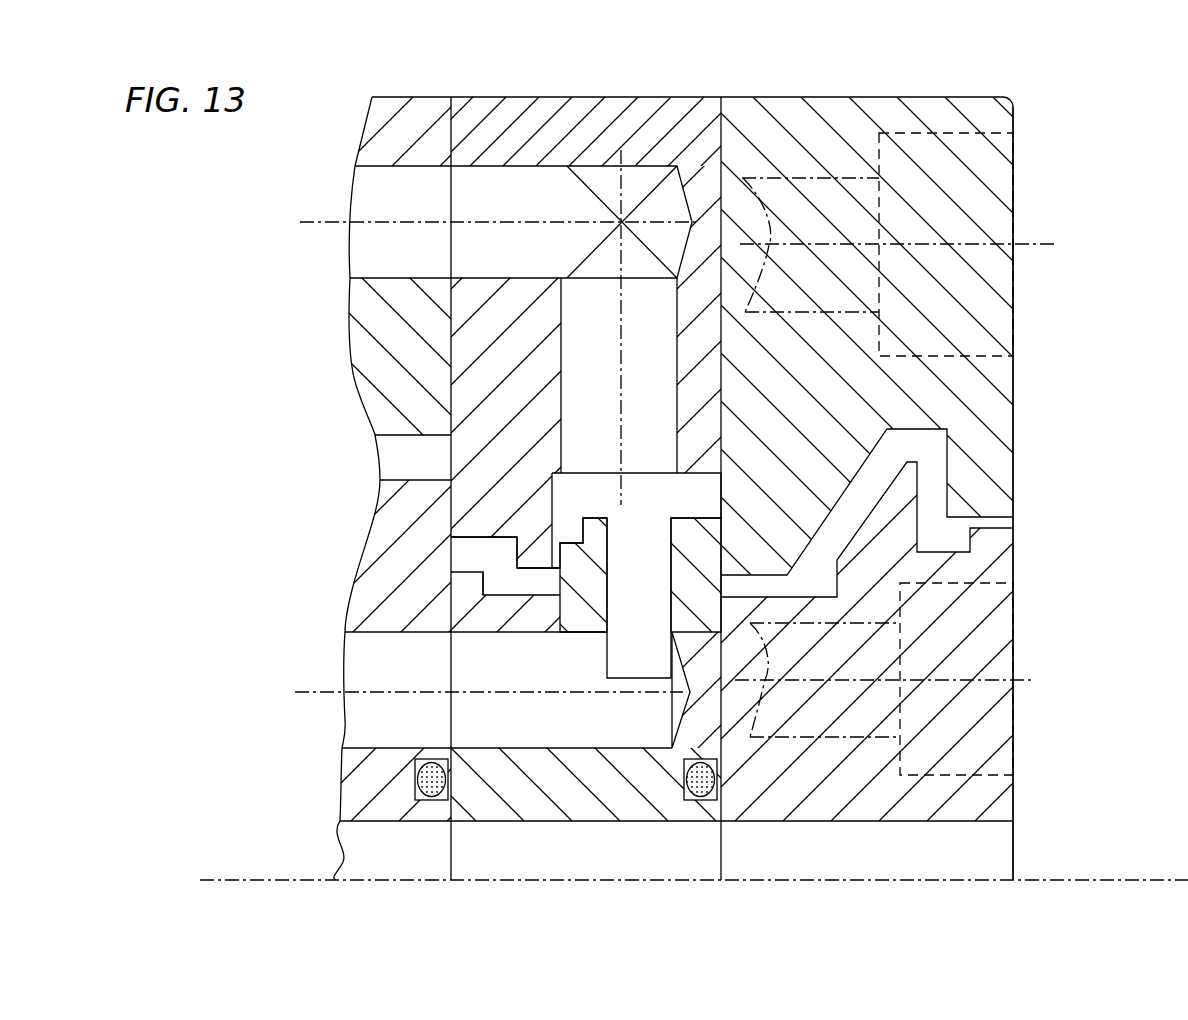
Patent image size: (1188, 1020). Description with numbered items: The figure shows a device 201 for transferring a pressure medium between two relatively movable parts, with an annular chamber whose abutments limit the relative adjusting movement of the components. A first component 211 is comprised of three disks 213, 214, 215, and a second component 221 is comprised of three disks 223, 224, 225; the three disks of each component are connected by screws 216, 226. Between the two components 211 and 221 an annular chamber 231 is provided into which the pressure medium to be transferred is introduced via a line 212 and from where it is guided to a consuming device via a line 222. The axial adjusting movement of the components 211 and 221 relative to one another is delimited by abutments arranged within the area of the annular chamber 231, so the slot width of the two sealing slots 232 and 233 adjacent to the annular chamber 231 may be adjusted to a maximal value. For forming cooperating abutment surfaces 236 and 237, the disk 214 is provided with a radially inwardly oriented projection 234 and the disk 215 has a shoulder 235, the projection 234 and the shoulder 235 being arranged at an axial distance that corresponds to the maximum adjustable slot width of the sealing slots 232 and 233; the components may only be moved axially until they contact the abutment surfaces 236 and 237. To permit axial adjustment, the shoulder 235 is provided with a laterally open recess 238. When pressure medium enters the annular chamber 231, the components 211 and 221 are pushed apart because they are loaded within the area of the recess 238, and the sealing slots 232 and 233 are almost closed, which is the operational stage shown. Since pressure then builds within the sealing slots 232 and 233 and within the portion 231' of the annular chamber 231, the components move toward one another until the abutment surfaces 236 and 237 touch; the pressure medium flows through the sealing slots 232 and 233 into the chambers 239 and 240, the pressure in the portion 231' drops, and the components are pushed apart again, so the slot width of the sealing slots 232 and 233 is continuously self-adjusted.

The device 201 is at (192, 399).
The first component 211 is at (682, 95).
The line 212 is at (512, 190).
The disk 213 is at (400, 130).
The disk 214 is at (583, 130).
The disk 215 is at (800, 130).
The screws 216 is at (945, 128).
The second component 221 is at (1018, 800).
The line 222 is at (600, 730).
The disk 223 is at (390, 800).
The disk 224 is at (515, 797).
The disk 225 is at (825, 793).
The screws 226 is at (963, 782).
The annular chamber 231 is at (836, 488).
The portion of the annular chamber 231' is at (419, 554).
The sealing slot 232 is at (495, 473).
The sealing slot 233 is at (742, 531).
The projection 234 is at (535, 557).
The shoulder 235 is at (566, 545).
The abutment surface 236 is at (550, 592).
The abutment surface 237 is at (545, 572).
The recess 238 is at (572, 528).
The chamber 239 is at (392, 460).
The chamber 240 is at (765, 584).